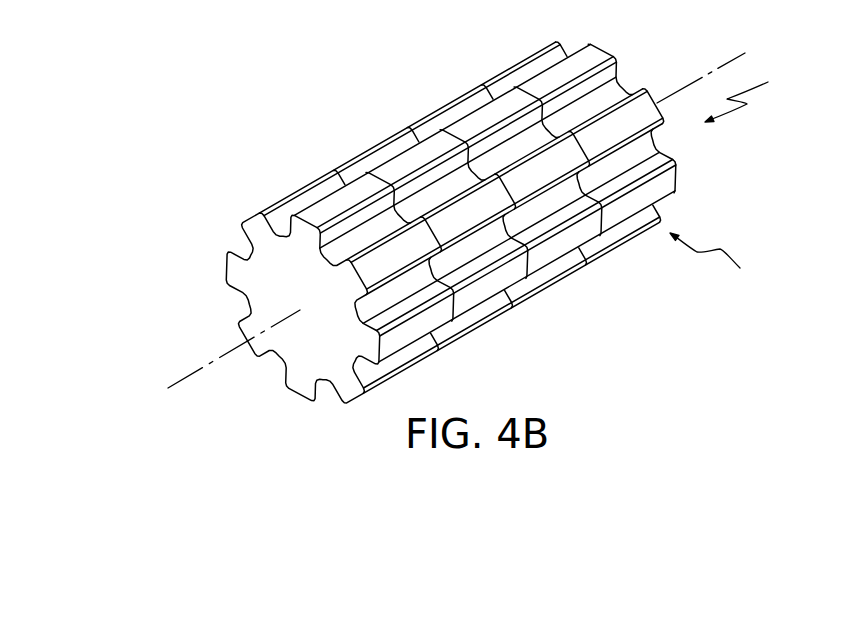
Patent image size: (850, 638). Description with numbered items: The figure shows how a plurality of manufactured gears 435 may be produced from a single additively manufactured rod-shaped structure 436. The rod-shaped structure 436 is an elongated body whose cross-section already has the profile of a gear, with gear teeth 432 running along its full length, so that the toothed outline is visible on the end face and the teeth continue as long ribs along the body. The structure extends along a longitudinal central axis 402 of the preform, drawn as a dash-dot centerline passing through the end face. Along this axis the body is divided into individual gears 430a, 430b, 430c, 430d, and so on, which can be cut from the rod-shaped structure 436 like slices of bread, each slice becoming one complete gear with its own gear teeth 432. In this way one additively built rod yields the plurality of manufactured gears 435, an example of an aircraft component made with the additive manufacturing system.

The individual gear 430a is at (292, 206).
The individual gear 430b is at (373, 163).
The individual gear 430c is at (438, 120).
The individual gear 430d is at (512, 82).
The gear teeth 432 is at (250, 276).
The longitudinal central axis 402 is at (207, 363).
The manufactured gears 435 is at (726, 259).
The rod-shaped structure 436 is at (760, 93).